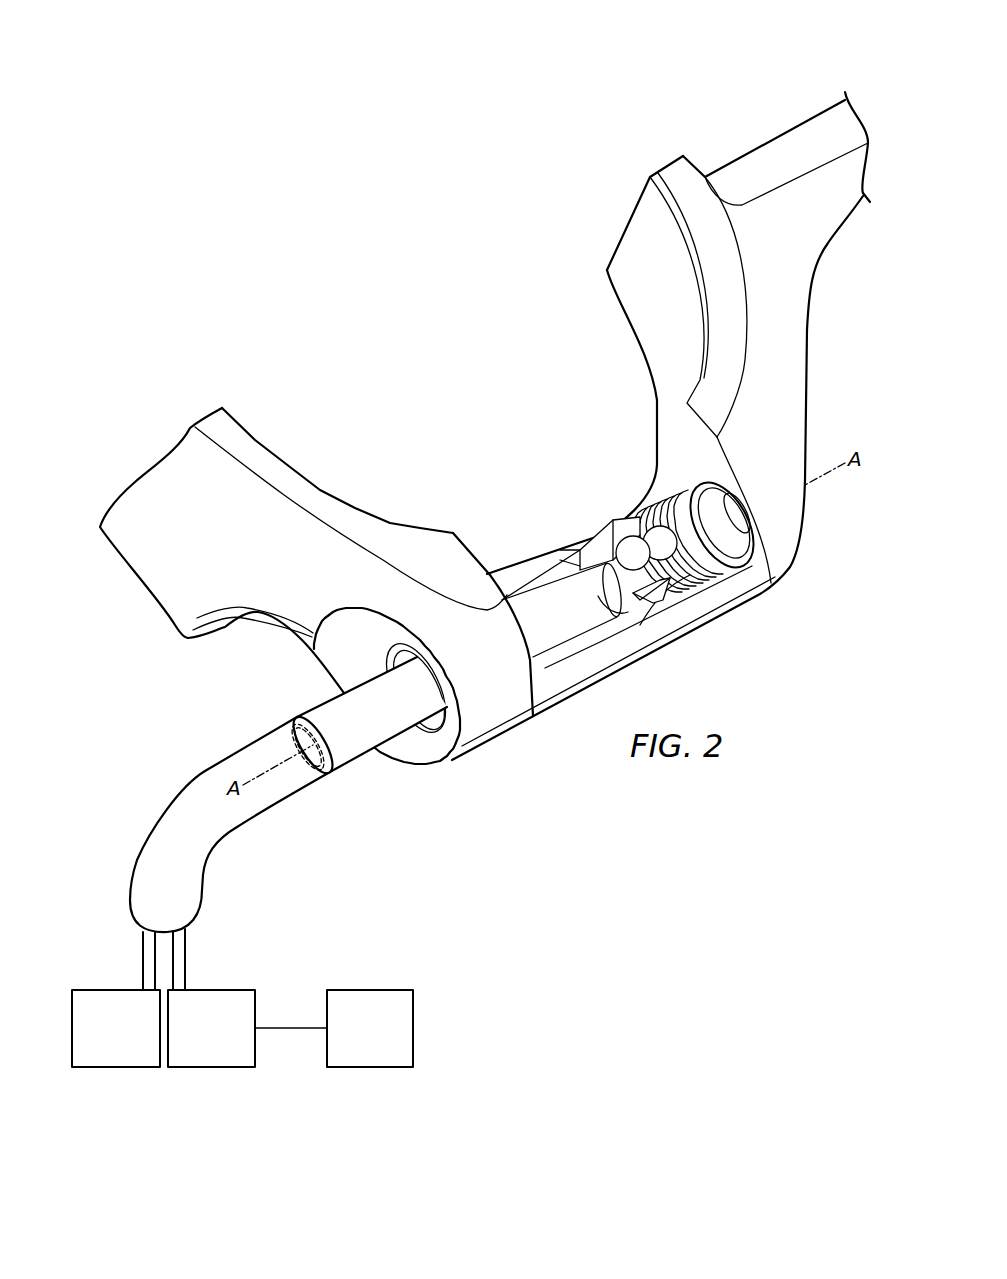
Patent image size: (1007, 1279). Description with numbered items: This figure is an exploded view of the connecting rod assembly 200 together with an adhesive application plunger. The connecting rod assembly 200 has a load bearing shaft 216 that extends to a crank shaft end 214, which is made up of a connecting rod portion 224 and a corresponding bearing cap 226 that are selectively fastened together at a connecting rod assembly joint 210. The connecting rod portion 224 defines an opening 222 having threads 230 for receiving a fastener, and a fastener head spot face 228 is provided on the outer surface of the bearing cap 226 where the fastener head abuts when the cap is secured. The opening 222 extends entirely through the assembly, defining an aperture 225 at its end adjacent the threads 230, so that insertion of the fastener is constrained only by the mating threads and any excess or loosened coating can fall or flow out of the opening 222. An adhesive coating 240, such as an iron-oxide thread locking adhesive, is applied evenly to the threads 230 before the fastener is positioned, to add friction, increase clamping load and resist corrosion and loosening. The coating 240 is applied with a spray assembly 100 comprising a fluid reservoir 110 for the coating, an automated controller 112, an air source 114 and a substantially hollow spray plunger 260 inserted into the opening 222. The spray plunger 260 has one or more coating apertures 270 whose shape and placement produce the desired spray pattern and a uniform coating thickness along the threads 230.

The spray assembly 100 is at (312, 1135).
The fluid reservoir 110 is at (240, 988).
The automated controller 112 is at (397, 988).
The air source 114 is at (85, 988).
The connecting rod assembly 200 is at (676, 87).
The connecting rod assembly joint 210 is at (660, 640).
The crank shaft end 214 is at (755, 640).
The load bearing shaft 216 is at (792, 143).
The opening 222 is at (433, 720).
The connecting rod portion 224 is at (788, 383).
The aperture 225 is at (810, 528).
The bearing cap 226 is at (190, 450).
The fastener head spot face 228 is at (433, 755).
The threads 230 is at (653, 493).
The adhesive coating 240 is at (645, 522).
The spray plunger 260 is at (350, 737).
The coating aperture 270 is at (670, 583).